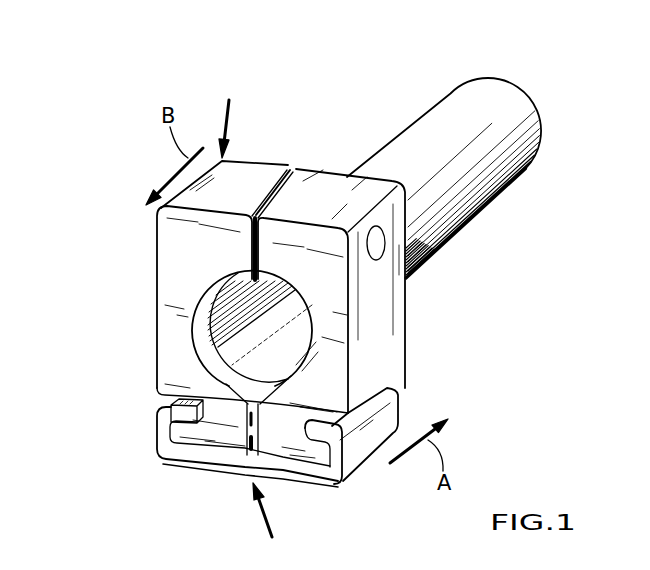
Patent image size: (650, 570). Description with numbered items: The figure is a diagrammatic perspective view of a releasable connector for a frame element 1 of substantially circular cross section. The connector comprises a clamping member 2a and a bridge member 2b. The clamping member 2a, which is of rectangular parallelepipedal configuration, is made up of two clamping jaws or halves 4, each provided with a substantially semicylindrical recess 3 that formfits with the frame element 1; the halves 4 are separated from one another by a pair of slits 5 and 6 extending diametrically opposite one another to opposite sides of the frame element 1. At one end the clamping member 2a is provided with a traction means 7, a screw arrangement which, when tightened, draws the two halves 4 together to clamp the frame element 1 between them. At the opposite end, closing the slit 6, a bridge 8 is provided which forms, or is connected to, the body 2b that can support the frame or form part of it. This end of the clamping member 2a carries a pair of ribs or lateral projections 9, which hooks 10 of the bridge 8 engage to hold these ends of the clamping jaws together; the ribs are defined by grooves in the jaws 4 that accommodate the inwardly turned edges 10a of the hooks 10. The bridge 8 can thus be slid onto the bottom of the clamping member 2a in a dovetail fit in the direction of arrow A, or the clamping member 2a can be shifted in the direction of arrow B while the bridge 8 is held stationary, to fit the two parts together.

The frame element 1 is at (452, 102).
The clamping member 2a is at (232, 118).
The bridge member 2b is at (270, 523).
The semicylindrical recess 3 is at (192, 358).
The clamping jaws 4 is at (178, 282).
The slit 5 is at (291, 180).
The slit 6 is at (248, 442).
The traction means 7 is at (378, 250).
The bridge 8 is at (208, 467).
The ribs or lateral projections 9 is at (183, 438).
The hooks 10 is at (158, 453).
The inwardly turned edges 10a is at (171, 409).